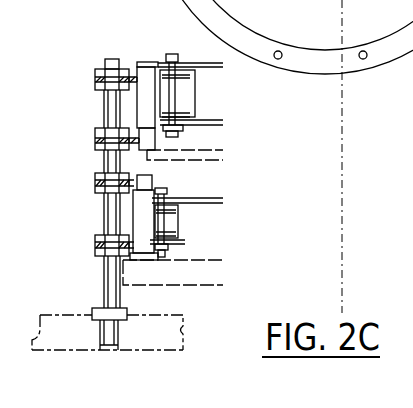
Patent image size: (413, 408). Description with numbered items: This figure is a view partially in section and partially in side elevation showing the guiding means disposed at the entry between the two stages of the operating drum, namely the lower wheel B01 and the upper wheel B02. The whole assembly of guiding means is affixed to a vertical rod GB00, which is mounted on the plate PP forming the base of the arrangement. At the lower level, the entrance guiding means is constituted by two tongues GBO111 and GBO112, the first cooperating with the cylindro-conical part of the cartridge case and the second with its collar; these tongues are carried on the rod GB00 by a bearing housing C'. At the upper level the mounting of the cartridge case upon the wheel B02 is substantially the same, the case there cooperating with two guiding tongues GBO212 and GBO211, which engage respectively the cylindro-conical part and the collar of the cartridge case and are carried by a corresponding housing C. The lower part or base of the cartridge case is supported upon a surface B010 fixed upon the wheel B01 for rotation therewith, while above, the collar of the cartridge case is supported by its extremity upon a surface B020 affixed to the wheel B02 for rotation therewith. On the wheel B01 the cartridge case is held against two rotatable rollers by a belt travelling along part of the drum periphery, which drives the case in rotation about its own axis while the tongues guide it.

The rod GB00 is at (113, 58).
The guiding tongue GBO212 is at (134, 88).
The guiding tongue GBO211 is at (134, 140).
The upper bearing housing C is at (156, 89).
The wheel B02 is at (208, 89).
The surface B020 is at (208, 154).
The tongue GBO112 is at (134, 196).
The tongue GBO111 is at (133, 245).
The lower bearing housing C' is at (102, 217).
The wheel B01 is at (200, 225).
The surface B010 is at (200, 270).
The plate PP is at (167, 330).